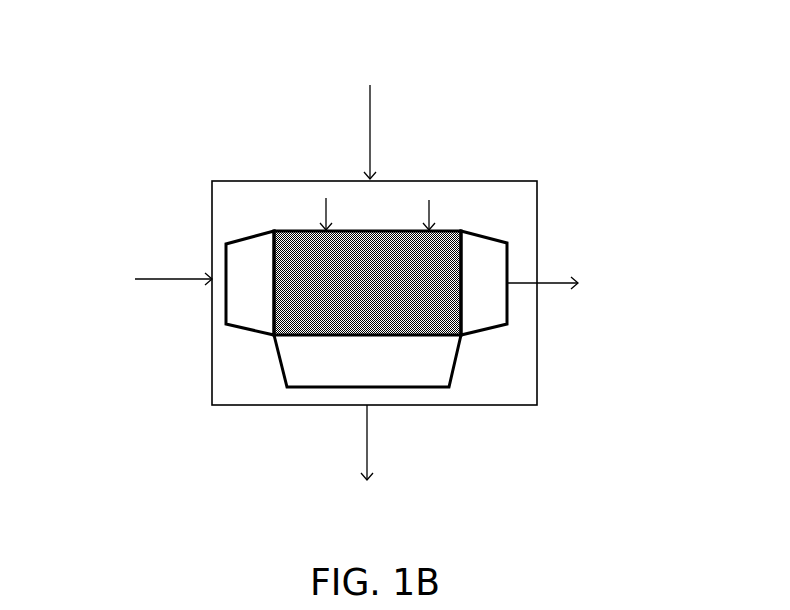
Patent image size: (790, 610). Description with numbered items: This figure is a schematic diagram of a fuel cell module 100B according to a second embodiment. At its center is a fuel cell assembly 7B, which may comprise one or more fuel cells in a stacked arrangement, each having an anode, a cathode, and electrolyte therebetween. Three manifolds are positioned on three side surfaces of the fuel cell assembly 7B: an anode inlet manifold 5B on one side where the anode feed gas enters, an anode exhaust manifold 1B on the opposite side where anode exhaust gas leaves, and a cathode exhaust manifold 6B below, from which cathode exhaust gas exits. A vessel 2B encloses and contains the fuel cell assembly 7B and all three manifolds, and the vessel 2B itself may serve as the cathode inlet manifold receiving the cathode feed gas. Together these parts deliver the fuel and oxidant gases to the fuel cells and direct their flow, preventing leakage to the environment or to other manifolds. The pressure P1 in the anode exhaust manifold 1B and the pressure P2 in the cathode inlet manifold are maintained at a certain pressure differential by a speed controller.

The fuel cell module 100B is at (140, 112).
The vessel 2B is at (273, 178).
The fuel cell assembly 7B is at (367, 283).
The anode inlet manifold 5B is at (227, 265).
The anode exhaust manifold 1B is at (485, 237).
The cathode exhaust manifold 6B is at (317, 388).
The pressure in the anode exhaust manifold P1 is at (525, 286).
The pressure in the cathode inlet manifold P2 is at (410, 213).